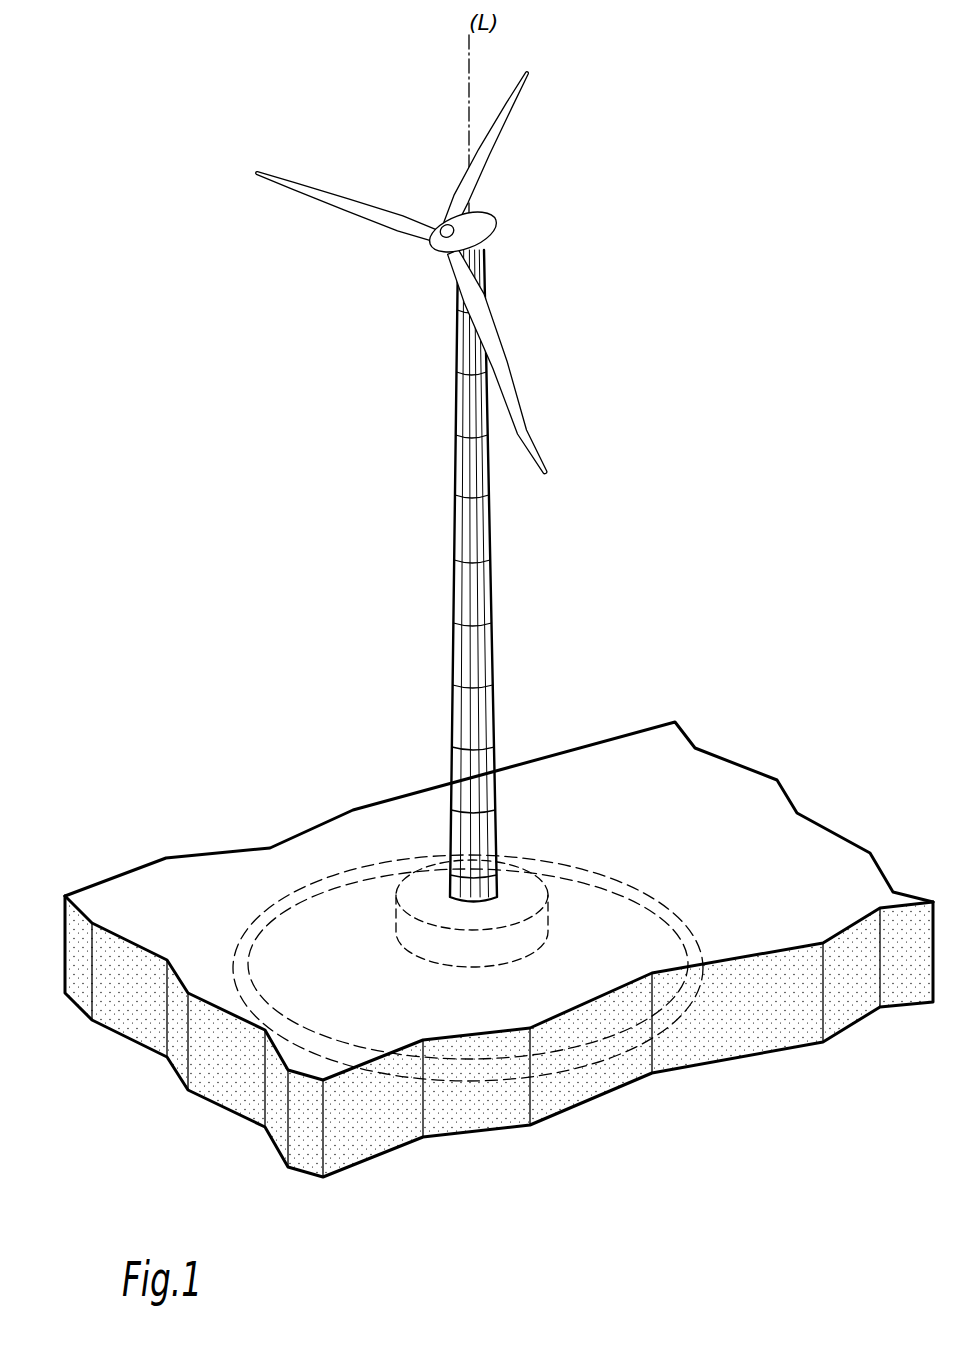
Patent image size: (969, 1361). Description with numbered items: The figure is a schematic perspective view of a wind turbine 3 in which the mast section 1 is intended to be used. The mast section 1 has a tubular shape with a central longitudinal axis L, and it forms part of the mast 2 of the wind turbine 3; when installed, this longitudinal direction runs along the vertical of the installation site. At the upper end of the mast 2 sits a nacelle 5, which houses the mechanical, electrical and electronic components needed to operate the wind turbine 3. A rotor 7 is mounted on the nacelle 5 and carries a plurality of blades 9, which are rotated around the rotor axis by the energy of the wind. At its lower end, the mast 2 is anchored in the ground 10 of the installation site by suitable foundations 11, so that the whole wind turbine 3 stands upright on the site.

The mast section 1 is at (463, 468).
The mast 2 is at (434, 312).
The wind turbine 3 is at (281, 509).
The nacelle 5 is at (488, 213).
The rotor 7 is at (427, 201).
The blades 9 is at (371, 216).
The ground 10 is at (725, 1030).
The foundations 11 is at (645, 910).